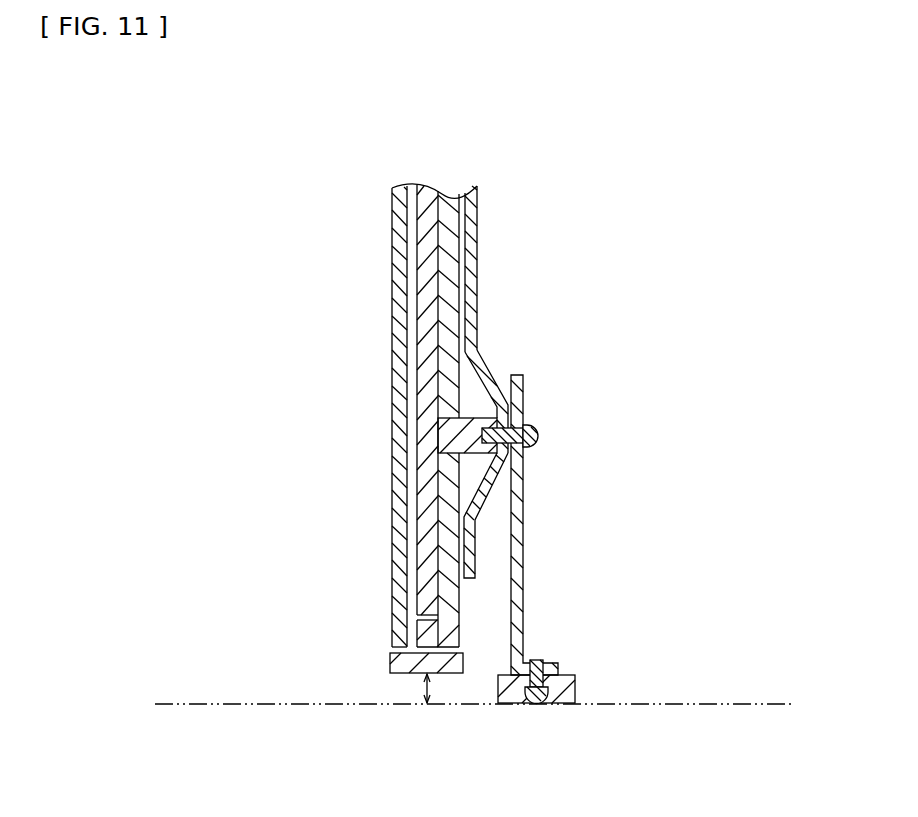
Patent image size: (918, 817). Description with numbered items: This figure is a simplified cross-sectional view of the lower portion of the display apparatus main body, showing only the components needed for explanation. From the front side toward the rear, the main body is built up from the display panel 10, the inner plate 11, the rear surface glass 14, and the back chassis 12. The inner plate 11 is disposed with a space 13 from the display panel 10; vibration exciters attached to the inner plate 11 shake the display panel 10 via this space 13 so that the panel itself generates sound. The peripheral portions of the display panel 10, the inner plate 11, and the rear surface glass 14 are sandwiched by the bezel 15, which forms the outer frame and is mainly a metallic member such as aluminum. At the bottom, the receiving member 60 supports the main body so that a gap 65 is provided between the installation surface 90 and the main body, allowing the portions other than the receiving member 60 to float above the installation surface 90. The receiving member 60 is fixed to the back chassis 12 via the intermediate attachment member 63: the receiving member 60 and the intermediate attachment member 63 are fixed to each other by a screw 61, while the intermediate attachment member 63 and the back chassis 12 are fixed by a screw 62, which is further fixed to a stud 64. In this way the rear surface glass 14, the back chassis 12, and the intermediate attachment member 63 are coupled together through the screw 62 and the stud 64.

The display panel 10 is at (392, 247).
The inner plate 11 is at (416, 320).
The back chassis 12 is at (478, 236).
The space 13 is at (413, 192).
The rear surface glass 14 is at (462, 386).
The bezel 15 is at (388, 662).
The receiving member 60 is at (578, 690).
The screw 61 is at (536, 659).
The screw 62 is at (540, 437).
The intermediate attachment member 63 is at (525, 513).
The stud 64 is at (442, 440).
The gap 65 is at (423, 690).
The installation surface 90 is at (713, 703).